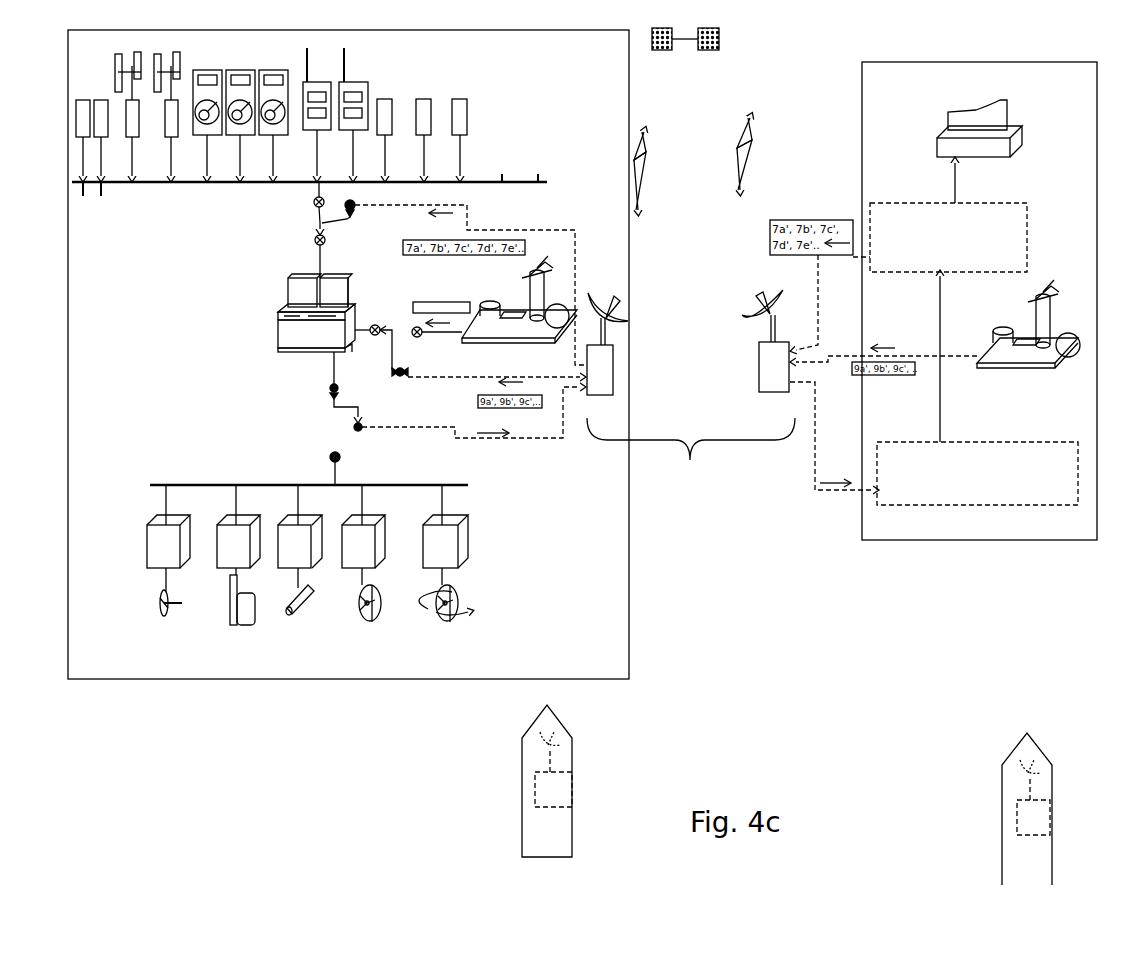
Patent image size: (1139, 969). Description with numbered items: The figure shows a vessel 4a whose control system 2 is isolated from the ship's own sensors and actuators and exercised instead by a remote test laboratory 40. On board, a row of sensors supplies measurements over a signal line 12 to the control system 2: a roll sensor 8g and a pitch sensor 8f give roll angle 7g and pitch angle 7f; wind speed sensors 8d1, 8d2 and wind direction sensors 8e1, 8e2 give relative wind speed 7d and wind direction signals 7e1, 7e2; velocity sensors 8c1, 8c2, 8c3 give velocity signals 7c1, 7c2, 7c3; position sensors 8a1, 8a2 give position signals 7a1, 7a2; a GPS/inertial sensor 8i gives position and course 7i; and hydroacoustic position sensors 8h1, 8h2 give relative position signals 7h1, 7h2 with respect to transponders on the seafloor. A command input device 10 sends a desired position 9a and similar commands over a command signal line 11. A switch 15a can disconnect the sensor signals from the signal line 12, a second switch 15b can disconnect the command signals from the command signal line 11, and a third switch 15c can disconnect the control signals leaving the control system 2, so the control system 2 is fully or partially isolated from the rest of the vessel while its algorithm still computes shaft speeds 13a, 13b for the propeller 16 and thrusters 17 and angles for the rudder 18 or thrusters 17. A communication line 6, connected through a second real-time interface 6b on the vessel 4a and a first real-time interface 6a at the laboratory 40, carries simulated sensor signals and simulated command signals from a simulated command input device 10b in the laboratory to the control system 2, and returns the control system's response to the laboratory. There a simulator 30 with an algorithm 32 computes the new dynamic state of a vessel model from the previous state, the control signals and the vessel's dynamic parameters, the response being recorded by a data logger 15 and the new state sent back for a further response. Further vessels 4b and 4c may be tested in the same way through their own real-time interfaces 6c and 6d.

The control system 2 is at (316, 313).
The first vessel 4a is at (346, 687).
The second vessel 4b is at (535, 781).
The third vessel 4c is at (1018, 809).
The communication line 6 is at (691, 386).
The first real-time interface 6a is at (765, 341).
The second real-time interface 6b is at (607, 344).
The real-time interface 6c is at (1033, 797).
The real-time interface 6d is at (553, 769).
The position sensor signal 7a1 is at (328, 153).
The position sensor signal 7a2 is at (363, 153).
The velocity sensor signal 7c1 is at (213, 155).
The velocity sensor signal 7c2 is at (248, 155).
The velocity sensor signal 7c3 is at (280, 155).
The wind speed signal 7d is at (122, 156).
The wind direction signal 7e1 is at (145, 155).
The wind direction signal 7e2 is at (172, 156).
The pitch angle signal 7f is at (106, 156).
The roll angle signal 7g is at (81, 156).
The hydroacoustic position signal 7h1 is at (434, 155).
The hydroacoustic position signal 7h2 is at (470, 155).
The GPS/inertial position and course signal 7i is at (392, 155).
The position sensor 8a1 is at (317, 89).
The position sensor 8a2 is at (353, 89).
The velocity sensor 8c1 is at (207, 92).
The velocity sensor 8c2 is at (240, 92).
The velocity sensor 8c3 is at (273, 92).
The wind speed sensor 8d1 is at (128, 94).
The wind speed sensor 8d2 is at (167, 94).
The wind direction sensor 8e1 is at (149, 87).
The wind direction sensor 8e2 is at (190, 87).
The pitch sensor 8f is at (100, 107).
The roll sensor 8g is at (83, 107).
The hydroacoustic position sensor 8h1 is at (426, 92).
The hydroacoustic position sensor 8h2 is at (461, 92).
The GPS/inertial sensor 8i is at (385, 92).
The desired position command signal 9a is at (442, 314).
The command input device 10 is at (500, 340).
The simulated command input device 10b is at (1017, 366).
The command signal line 11 is at (433, 340).
The signal line 12 is at (403, 184).
The shaft speed control signal 13a is at (325, 403).
The shaft speed control signal 13b is at (934, 445).
The data logger 15 is at (1008, 160).
The switch 15a is at (323, 223).
The second switch 15b is at (467, 355).
The third switch 15c is at (353, 433).
The propeller 16 is at (166, 616).
The thruster 17 is at (305, 622).
The rudder 18 is at (238, 630).
The simulator 30 is at (948, 215).
The algorithm 32 is at (922, 203).
The remote test laboratory 40 is at (975, 62).